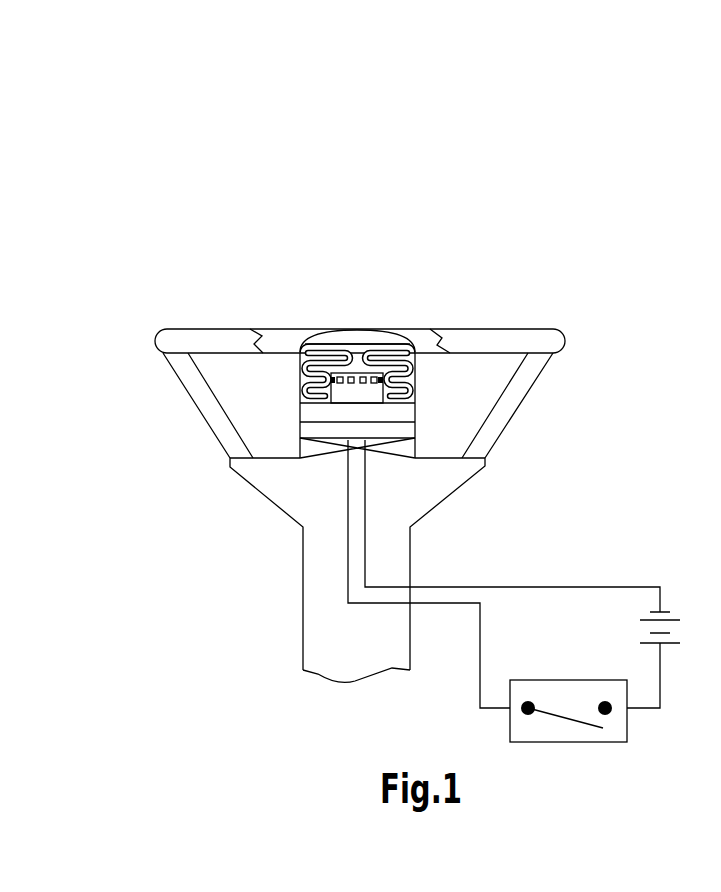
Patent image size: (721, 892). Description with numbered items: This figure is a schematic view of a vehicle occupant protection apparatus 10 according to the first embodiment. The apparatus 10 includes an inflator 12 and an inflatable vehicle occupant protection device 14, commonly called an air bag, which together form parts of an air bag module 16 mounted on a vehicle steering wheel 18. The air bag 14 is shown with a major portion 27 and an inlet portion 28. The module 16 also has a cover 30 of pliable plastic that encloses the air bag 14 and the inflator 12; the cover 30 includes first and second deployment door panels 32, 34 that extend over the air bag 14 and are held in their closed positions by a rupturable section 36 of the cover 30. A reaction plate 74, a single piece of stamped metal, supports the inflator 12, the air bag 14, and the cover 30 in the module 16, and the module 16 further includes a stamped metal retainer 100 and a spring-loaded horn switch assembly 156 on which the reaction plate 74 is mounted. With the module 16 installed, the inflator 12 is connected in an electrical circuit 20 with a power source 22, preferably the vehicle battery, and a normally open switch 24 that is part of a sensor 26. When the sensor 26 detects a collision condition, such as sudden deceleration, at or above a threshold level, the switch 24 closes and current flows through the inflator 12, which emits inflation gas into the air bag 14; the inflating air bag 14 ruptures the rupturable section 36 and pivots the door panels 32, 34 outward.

The vehicle occupant protection apparatus 10 is at (263, 301).
The inflator 12 is at (343, 393).
The inflatable vehicle occupant protection device 14 is at (285, 383).
The air bag module 16 is at (240, 435).
The vehicle steering wheel 18 is at (170, 330).
The electrical circuit 20 is at (553, 572).
The power source 22 is at (673, 619).
The normally open switch 24 is at (563, 718).
The sensor 26 is at (510, 725).
The major portion 27 is at (392, 346).
The inlet portion 28 is at (415, 393).
The cover 30 is at (438, 380).
The first deployment door panel 32 is at (315, 333).
The second deployment door panel 34 is at (385, 345).
The rupturable section 36 is at (360, 327).
The reaction plate 74 is at (415, 427).
The retainer 100 is at (415, 408).
The spring-loaded horn switch assembly 156 is at (415, 448).